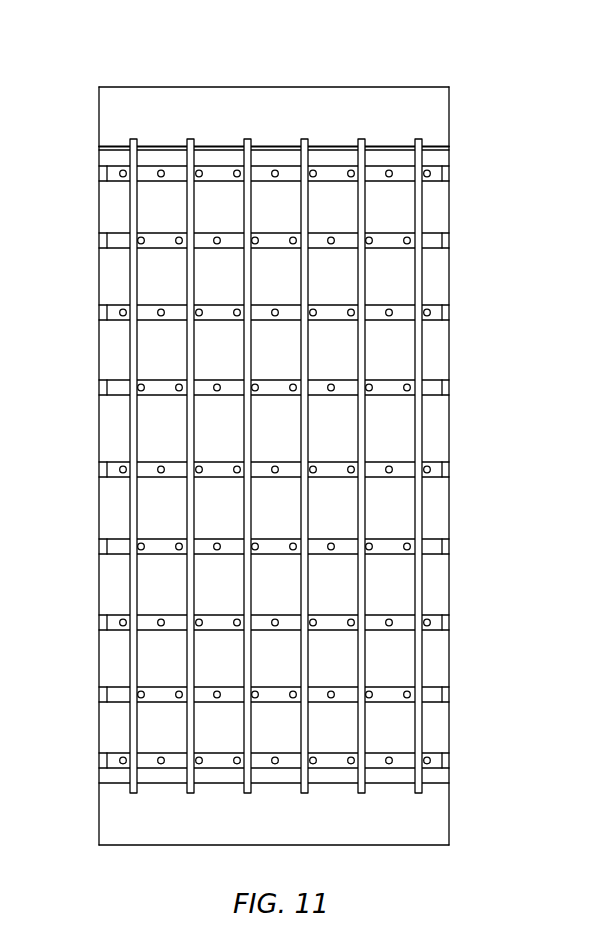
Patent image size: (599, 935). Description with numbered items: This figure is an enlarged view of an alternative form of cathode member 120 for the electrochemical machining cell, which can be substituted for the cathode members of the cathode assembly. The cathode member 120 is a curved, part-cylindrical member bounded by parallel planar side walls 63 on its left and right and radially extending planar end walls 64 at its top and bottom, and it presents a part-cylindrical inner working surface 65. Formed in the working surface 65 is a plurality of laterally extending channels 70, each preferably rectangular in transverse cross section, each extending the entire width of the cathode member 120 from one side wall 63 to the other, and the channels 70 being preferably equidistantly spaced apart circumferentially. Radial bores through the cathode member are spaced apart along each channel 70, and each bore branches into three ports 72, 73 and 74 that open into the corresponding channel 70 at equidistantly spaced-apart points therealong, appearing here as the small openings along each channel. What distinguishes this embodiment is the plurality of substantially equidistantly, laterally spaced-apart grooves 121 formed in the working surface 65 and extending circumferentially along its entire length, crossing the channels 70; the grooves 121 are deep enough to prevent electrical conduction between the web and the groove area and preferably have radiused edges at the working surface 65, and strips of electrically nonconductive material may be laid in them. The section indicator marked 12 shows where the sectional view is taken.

The cathode member 120 is at (295, 22).
The end wall 64 is at (367, 87).
The side wall 63 is at (99, 655).
The working surface 65 is at (117, 347).
The channel 70 is at (269, 467).
The groove 121 is at (186, 432).
The port 72 is at (428, 466).
The port 73 is at (389, 465).
The port 74 is at (351, 465).
The section line 12- 12 is at (96, 498).